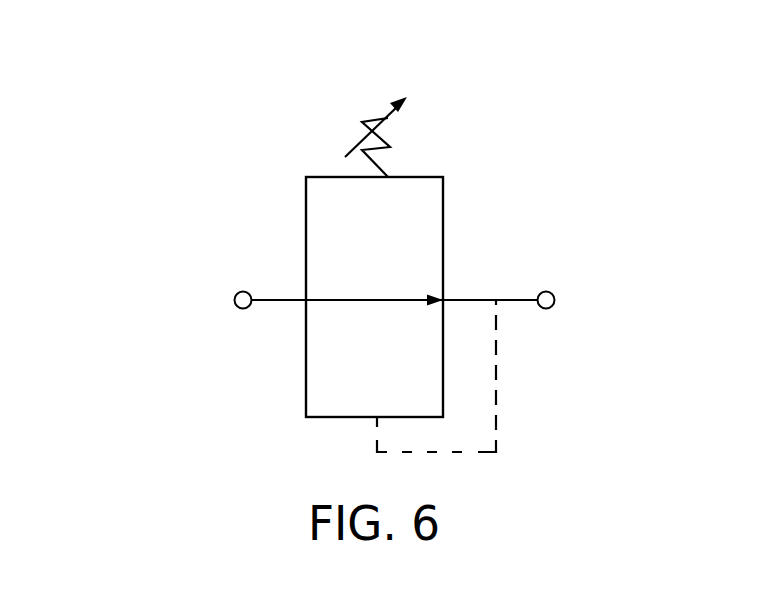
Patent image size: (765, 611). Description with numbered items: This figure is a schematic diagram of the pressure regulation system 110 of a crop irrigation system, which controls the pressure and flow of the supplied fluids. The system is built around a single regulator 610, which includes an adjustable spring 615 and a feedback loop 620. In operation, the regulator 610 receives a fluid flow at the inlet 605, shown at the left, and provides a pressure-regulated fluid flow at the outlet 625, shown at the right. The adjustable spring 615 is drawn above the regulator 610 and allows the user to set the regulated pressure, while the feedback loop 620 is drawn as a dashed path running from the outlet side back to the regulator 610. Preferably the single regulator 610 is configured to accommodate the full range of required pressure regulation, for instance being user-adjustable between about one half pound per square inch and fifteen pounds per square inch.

The pressure regulation system 110 is at (84, 488).
The inlet 605 is at (243, 291).
The regulator 610 is at (428, 247).
The adjustable spring 615 is at (333, 93).
The feedback loop 620 is at (497, 373).
The outlet 625 is at (548, 292).